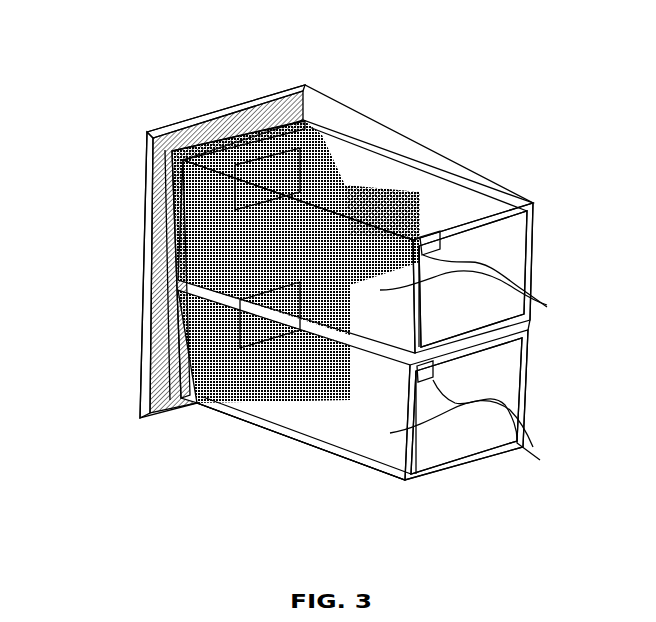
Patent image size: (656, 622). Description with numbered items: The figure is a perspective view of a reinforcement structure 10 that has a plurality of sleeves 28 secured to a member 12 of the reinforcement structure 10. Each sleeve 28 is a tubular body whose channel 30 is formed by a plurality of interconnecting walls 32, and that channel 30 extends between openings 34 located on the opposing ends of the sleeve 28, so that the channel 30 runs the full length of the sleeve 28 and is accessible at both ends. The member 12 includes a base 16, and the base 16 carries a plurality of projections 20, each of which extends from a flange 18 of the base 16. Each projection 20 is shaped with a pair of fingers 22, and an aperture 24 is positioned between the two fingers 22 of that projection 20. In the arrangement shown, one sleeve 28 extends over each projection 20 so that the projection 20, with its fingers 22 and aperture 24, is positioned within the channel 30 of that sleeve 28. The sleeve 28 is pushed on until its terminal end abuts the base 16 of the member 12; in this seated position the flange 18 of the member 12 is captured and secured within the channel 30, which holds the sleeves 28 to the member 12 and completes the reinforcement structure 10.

The reinforcement structure 10 is at (488, 88).
The member 12 is at (205, 103).
The base 16 is at (155, 238).
The flange 18 is at (177, 167).
The projection 20 is at (348, 188).
The fingers 22 is at (480, 365).
The aperture 24 is at (353, 235).
The sleeve 28 is at (503, 187).
The channel 30 is at (468, 312).
The interconnecting walls 32 is at (330, 127).
The openings 34 is at (535, 253).